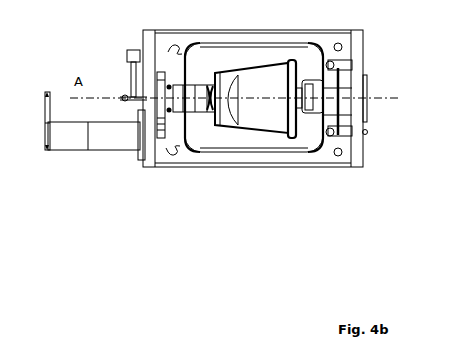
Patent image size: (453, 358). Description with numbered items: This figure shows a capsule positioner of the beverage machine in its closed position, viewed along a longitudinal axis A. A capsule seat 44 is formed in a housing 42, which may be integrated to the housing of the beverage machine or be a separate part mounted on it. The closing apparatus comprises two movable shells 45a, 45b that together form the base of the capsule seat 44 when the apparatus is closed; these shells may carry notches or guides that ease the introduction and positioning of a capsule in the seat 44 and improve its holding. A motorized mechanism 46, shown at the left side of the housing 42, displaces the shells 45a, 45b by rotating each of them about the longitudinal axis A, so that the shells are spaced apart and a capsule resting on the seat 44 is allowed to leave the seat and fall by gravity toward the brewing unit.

The housing 42 is at (317, 158).
The capsule seat 44 is at (226, 125).
The movable shell 45a is at (200, 133).
The movable shell 45b is at (212, 60).
The motorized mechanism 46 is at (62, 137).